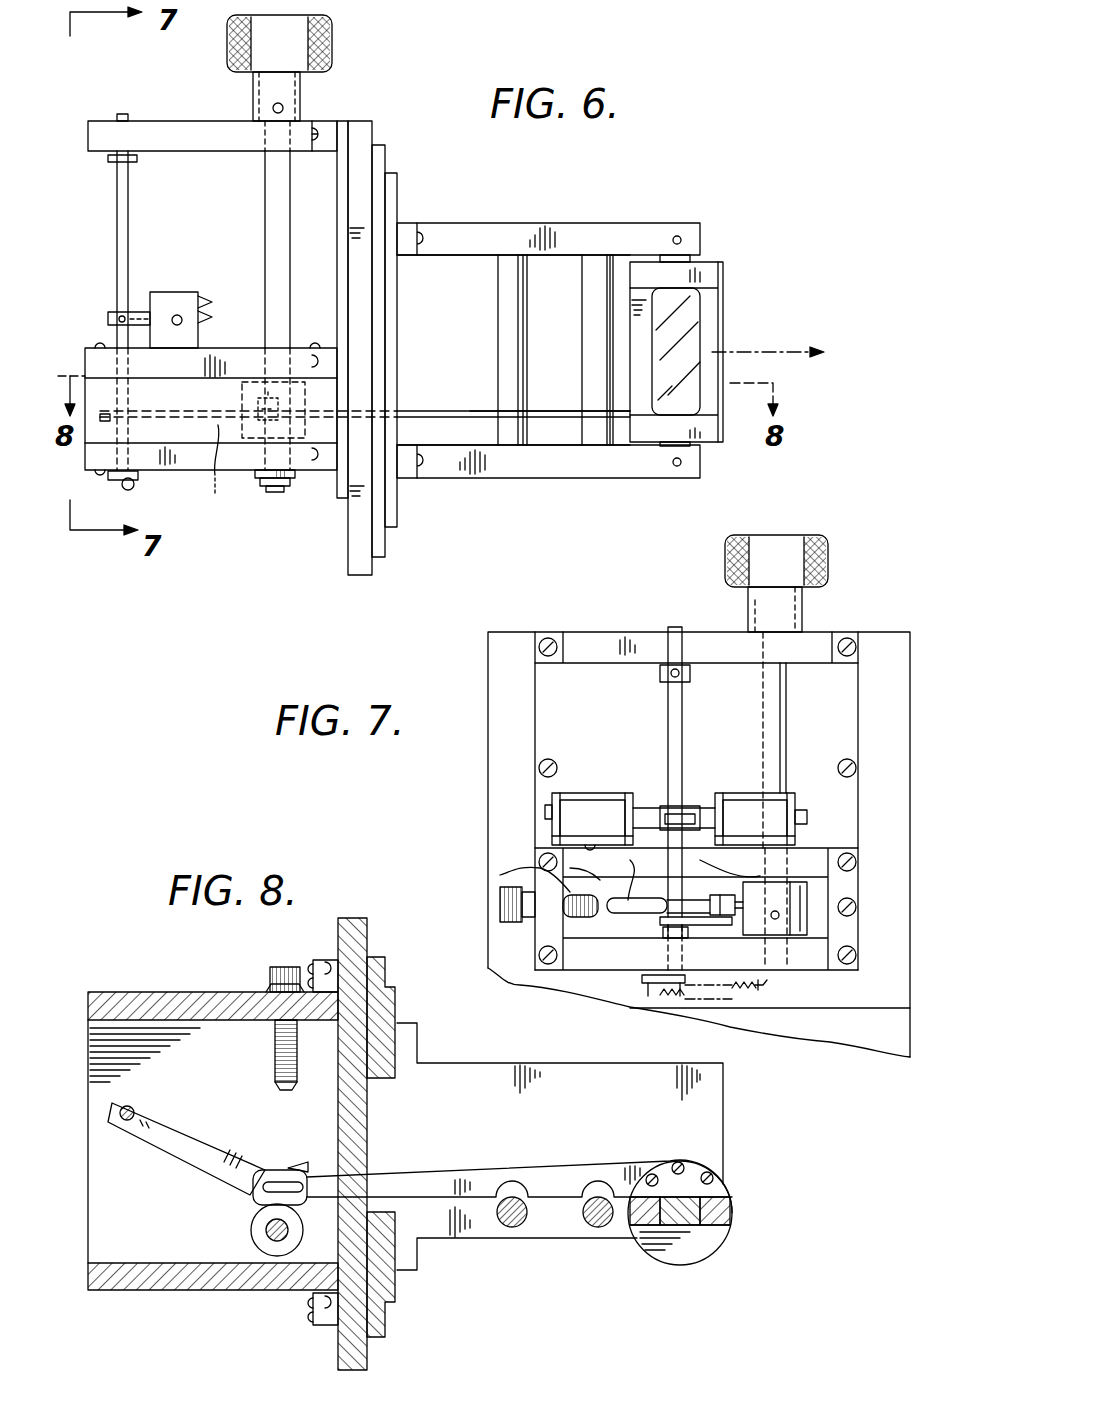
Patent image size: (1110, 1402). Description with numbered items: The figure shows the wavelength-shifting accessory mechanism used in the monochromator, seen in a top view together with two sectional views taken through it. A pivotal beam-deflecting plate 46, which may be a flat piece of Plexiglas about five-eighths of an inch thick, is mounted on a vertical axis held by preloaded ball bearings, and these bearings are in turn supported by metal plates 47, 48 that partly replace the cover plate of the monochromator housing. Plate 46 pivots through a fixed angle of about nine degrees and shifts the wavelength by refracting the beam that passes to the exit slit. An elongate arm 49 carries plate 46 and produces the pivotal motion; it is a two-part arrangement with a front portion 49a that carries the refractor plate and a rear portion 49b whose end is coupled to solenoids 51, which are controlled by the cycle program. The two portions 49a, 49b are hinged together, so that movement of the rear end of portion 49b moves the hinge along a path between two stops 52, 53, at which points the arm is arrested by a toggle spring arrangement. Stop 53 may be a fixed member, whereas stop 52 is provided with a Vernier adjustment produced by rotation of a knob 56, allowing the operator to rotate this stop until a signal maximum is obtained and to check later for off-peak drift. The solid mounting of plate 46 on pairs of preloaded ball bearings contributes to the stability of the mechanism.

In FIG. 6, the pivotal beam-deflecting plate 46 is at (697, 320).
In FIG. 8, the pivotal beam-deflecting plate 46 is at (682, 1226).
In FIG. 6, the metal plate 47 is at (598, 222).
In FIG. 6, the metal plate 48 is at (630, 478).
In FIG. 8, the metal plate 48 is at (478, 1108).
In FIG. 6, the elongate arm 49 is at (412, 408).
In FIG. 7, the elongate arm 49 is at (652, 928).
In FIG. 8, the elongate arm 49 is at (533, 1162).
In FIG. 6, the front portion of arm 49a is at (470, 410).
In FIG. 7, the front portion of arm 49a is at (740, 870).
In FIG. 8, the front portion of arm 49a is at (596, 1160).
In FIG. 6, the rear portion of arm 49b is at (215, 472).
In FIG. 7, the rear portion of arm 49b is at (702, 928).
In FIG. 8, the rear portion of arm 49b is at (208, 1145).
In FIG. 6, the solenoid 51 is at (186, 292).
In FIG. 7, the stop 52 is at (592, 925).
In FIG. 8, the stop 52 is at (268, 1052).
In FIG. 6, the stop 53 is at (242, 398).
In FIG. 7, the stop 53 is at (807, 915).
In FIG. 8, the stop 53 is at (251, 1230).
In FIG. 7, the knob 56 is at (500, 902).
In FIG. 8, the knob 56 is at (270, 976).